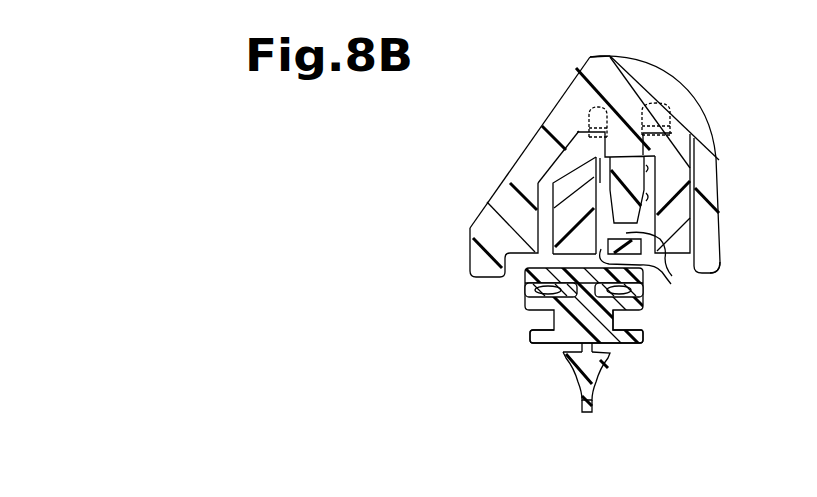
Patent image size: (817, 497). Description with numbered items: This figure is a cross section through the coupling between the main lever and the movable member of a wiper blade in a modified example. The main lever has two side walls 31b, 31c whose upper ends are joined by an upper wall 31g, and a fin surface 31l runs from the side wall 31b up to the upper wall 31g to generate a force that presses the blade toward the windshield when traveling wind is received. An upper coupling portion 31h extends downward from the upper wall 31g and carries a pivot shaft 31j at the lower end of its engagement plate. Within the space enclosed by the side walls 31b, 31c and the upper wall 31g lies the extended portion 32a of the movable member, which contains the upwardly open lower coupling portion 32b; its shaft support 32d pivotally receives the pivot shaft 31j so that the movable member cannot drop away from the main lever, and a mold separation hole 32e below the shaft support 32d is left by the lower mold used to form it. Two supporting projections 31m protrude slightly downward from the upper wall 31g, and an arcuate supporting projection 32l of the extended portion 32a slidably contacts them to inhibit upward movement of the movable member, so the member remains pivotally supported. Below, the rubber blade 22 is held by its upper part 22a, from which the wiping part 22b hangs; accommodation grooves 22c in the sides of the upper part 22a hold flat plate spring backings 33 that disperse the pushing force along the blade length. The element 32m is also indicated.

The rubber blade 22 is at (601, 377).
The upper part 22a is at (526, 284).
The wiping part 22b is at (582, 398).
The accommodation groove 22c is at (542, 296).
The side wall 31b is at (482, 240).
The side wall 31c is at (716, 230).
The upper wall 31g is at (631, 66).
The upper coupling portion 31h is at (597, 163).
The pivot shaft 31j is at (593, 165).
The fin surface 31l is at (540, 133).
The supporting projection 31m is at (598, 125).
The extended portion 32a is at (590, 130).
The lower coupling portion 32b is at (665, 210).
The shaft support 32d is at (652, 168).
The mold separation hole 32e is at (644, 270).
The arcuate supporting projection 32l is at (587, 63).
The outer edge of cover 32m is at (719, 252).
The backing 33 is at (532, 295).